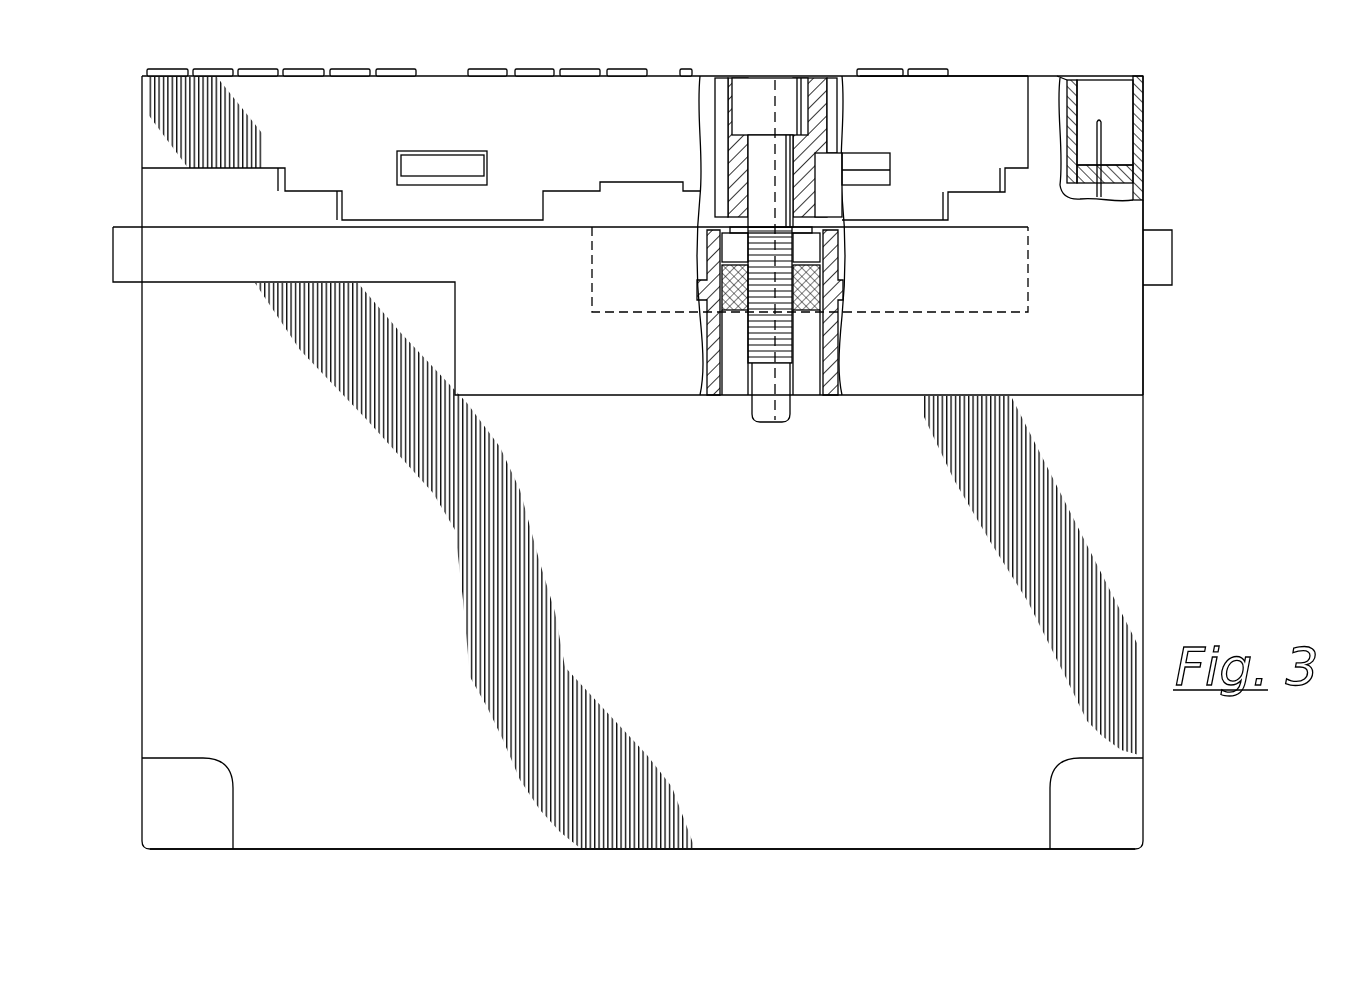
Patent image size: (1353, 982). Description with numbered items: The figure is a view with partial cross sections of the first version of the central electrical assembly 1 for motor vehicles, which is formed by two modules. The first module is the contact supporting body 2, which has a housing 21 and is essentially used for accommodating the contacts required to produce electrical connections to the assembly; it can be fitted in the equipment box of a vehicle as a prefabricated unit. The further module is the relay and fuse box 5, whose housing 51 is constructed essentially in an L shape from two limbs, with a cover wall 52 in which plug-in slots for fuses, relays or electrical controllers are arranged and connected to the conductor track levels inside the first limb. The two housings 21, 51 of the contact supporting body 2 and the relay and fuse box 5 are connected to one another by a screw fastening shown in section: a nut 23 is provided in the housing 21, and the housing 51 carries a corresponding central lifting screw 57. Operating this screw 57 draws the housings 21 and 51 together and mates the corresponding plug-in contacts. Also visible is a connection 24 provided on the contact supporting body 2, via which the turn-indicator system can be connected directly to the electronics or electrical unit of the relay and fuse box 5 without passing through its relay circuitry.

The central electrical assembly 1 is at (858, 853).
The contact supporting body 2 is at (1120, 331).
The relay and fuse box 5 is at (450, 128).
The housing 21 is at (1118, 220).
The nut 23 is at (737, 300).
The connection 24 is at (1118, 113).
The housing 51 is at (945, 108).
The cover wall 52 is at (662, 76).
The central lifting screw 57 is at (767, 90).